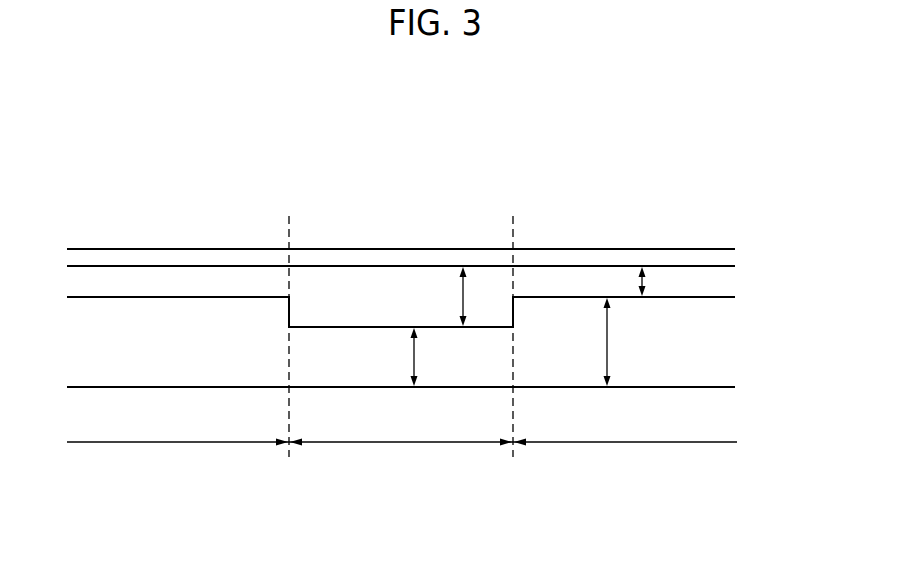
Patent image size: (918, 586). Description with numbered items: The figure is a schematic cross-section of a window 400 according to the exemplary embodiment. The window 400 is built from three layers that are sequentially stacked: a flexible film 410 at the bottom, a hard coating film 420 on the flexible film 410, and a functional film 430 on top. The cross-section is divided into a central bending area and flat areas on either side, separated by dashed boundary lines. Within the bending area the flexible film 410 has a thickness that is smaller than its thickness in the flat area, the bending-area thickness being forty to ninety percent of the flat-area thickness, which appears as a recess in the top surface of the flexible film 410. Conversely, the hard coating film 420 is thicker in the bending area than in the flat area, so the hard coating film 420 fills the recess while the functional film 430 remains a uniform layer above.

The window 400 is at (456, 180).
The flexible film 410 is at (735, 348).
The hard coating film 420 is at (735, 283).
The functional film 430 is at (735, 258).